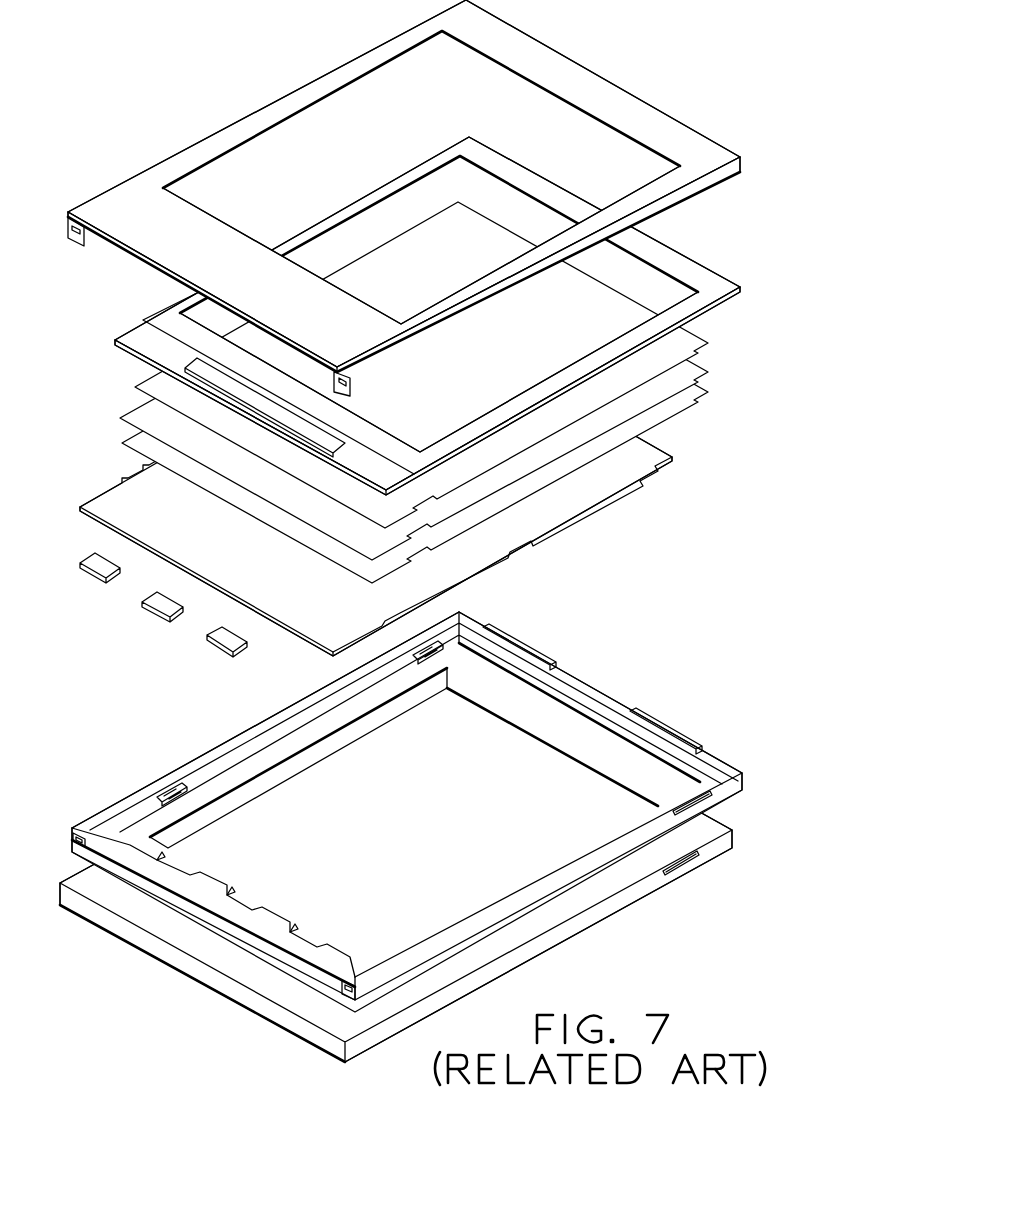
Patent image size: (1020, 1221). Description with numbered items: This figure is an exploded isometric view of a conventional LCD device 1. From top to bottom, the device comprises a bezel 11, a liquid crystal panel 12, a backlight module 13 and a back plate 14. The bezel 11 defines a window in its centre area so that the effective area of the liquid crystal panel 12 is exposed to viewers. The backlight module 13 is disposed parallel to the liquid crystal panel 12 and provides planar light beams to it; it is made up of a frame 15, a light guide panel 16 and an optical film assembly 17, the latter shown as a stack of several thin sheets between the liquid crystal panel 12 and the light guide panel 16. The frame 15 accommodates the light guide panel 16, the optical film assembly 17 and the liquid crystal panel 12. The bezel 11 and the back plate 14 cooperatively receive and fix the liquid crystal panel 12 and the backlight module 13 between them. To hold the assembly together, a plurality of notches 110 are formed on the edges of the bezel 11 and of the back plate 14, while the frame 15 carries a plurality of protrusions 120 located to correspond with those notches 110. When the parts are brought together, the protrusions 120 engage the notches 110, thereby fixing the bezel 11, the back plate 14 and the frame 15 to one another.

The LCD device 1 is at (203, 68).
The bezel 11 is at (628, 107).
The notches 110 is at (77, 240).
The liquid crystal panel 12 is at (667, 256).
The protrusions 120 is at (679, 812).
The backlight module 13 is at (437, 650).
The back plate 14 is at (574, 903).
The frame 15 is at (577, 677).
The light guide panel 16 is at (655, 456).
The optical film assembly 17 is at (435, 392).